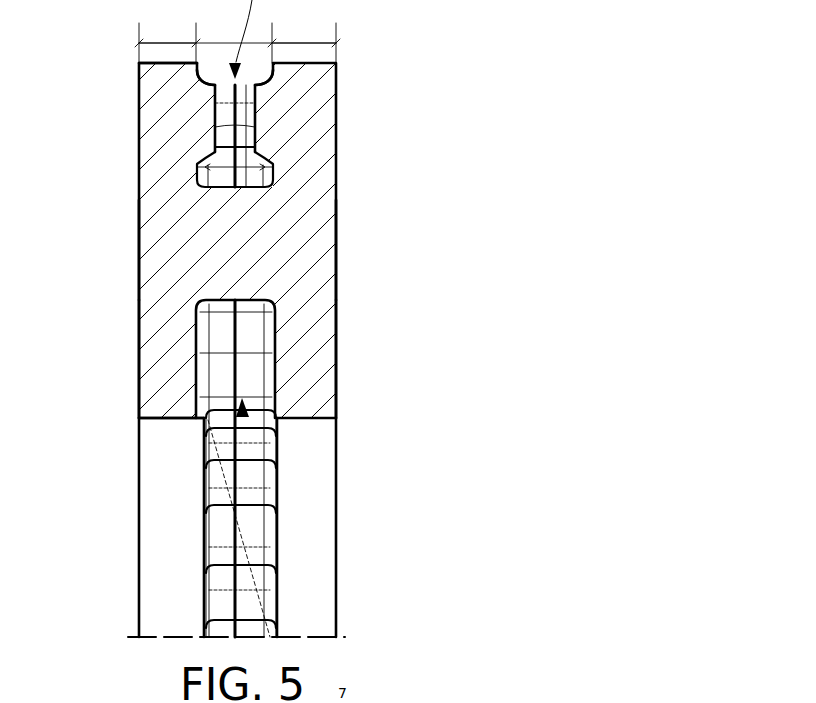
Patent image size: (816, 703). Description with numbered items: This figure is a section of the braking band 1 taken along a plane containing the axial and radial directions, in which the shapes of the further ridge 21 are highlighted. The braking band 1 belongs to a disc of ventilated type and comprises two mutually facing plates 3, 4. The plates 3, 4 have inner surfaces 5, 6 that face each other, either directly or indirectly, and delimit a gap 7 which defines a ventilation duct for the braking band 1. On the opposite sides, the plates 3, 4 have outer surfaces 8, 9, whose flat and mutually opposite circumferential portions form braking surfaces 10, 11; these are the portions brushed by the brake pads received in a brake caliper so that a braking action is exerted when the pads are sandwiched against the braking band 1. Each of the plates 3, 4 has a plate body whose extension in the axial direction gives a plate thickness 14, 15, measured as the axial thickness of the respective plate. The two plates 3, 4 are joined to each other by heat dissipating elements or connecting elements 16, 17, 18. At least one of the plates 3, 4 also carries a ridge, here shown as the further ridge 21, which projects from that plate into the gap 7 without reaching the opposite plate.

The braking band 1 is at (410, 162).
The plate 3 is at (312, 236).
The plate 4 is at (172, 237).
The inner surface 5 is at (266, 379).
The inner surface 6 is at (228, 355).
The gap 7 is at (277, 468).
The outer surface 8 is at (336, 307).
The outer surface 9 is at (139, 316).
The braking surface 10 is at (336, 276).
The braking surface 11 is at (139, 268).
The plate thickness 14 is at (306, 40).
The plate thickness 15 is at (165, 42).
The connecting element 16 is at (230, 119).
The connecting element 17 is at (232, 218).
The connecting element 18 is at (230, 355).
The further ridge 21 is at (213, 104).